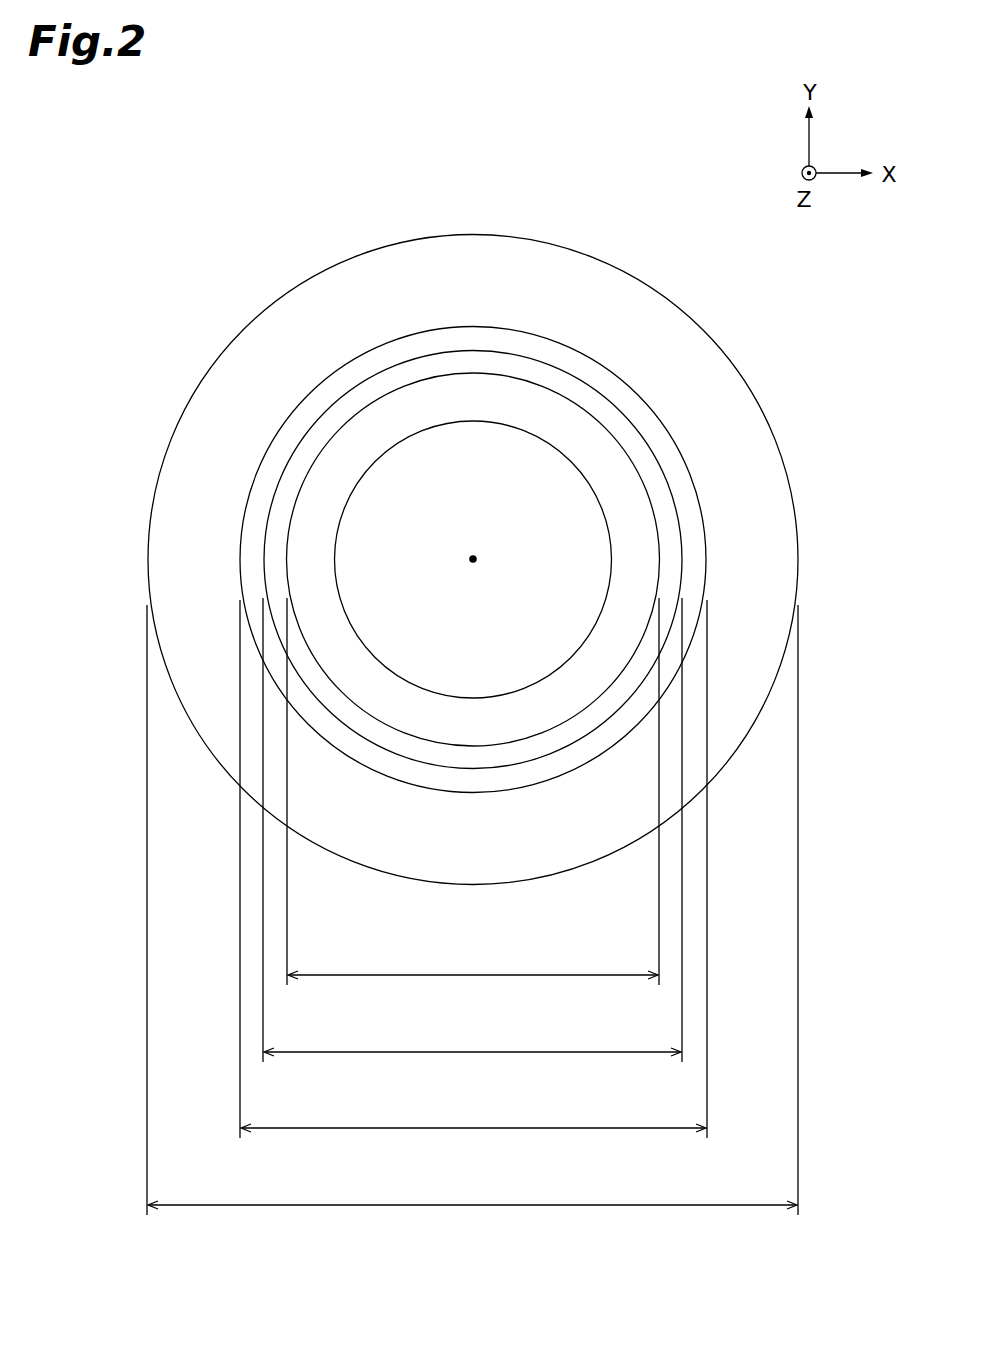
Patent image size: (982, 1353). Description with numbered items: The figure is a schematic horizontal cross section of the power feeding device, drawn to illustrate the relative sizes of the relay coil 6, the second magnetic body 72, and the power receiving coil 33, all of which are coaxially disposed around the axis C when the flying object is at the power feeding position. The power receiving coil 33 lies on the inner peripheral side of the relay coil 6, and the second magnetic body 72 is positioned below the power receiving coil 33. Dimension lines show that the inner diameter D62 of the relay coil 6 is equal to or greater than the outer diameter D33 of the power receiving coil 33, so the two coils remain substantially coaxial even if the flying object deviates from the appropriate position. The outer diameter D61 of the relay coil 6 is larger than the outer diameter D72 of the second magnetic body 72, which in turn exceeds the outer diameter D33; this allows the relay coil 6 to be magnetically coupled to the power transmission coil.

The relay coil 6 is at (679, 327).
The second magnetic body 72 is at (635, 442).
The power receiving coil 33 is at (538, 397).
The axis C is at (473, 554).
The outer diameter of the power receiving coil D33 is at (473, 791).
The outer diameter of the second magnetic body D72 is at (472, 830).
The inner diameter of the relay coil D62 is at (473, 869).
The outer diameter of the relay coil D61 is at (472, 910).